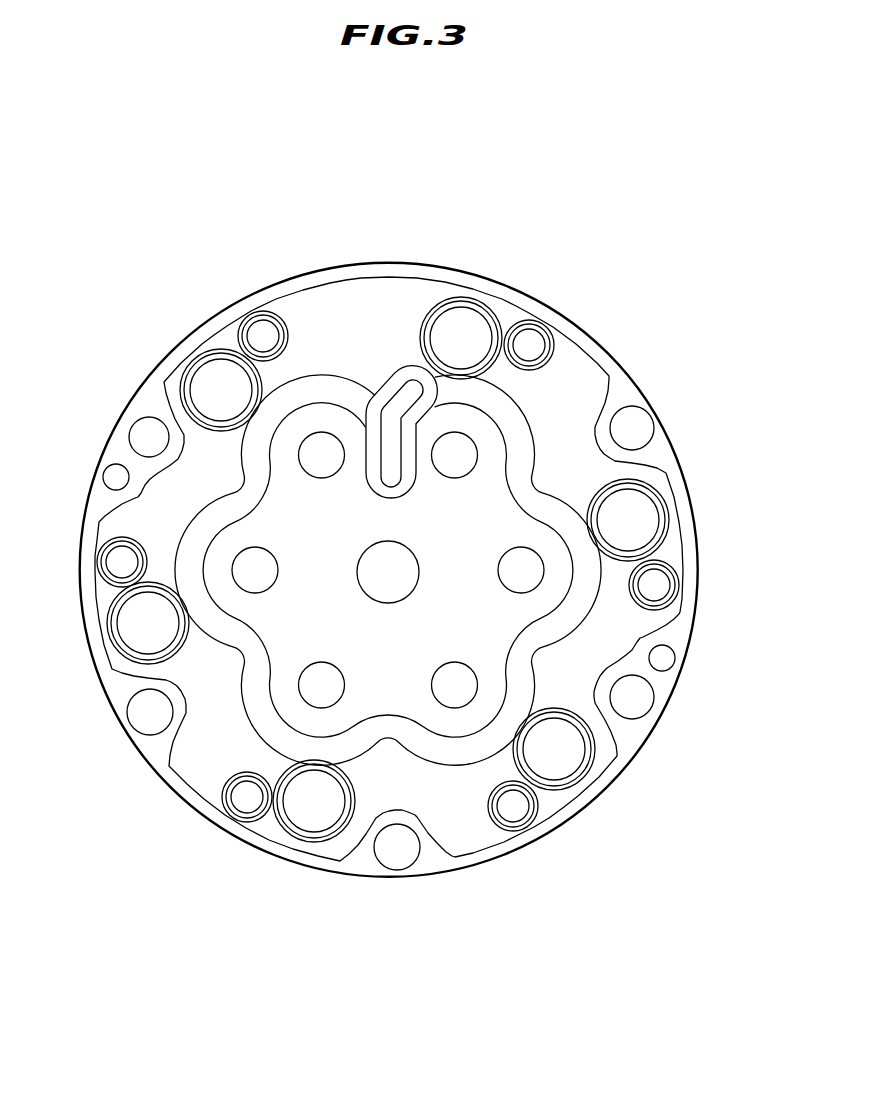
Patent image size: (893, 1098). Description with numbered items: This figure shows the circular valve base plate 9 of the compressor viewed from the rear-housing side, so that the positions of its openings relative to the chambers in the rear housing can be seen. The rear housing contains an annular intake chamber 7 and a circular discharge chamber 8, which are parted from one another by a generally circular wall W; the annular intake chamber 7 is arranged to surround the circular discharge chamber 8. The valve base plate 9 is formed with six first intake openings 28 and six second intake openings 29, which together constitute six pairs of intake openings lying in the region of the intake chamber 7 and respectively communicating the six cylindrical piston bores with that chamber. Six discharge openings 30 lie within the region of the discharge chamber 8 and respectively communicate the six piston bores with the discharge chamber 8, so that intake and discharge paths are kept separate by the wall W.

The valve base plate 9 is at (296, 248).
The annular intake chamber 7 is at (387, 318).
The circular discharge chamber 8 is at (353, 418).
The circular wall W is at (311, 392).
The first intake openings 28 is at (466, 324).
The second intake openings 29 is at (540, 340).
The discharge openings 30 is at (326, 452).